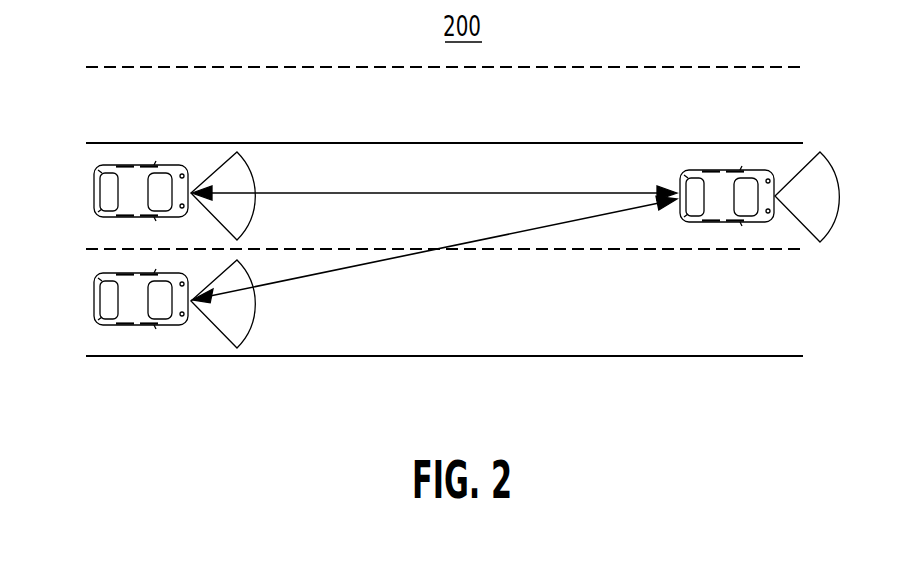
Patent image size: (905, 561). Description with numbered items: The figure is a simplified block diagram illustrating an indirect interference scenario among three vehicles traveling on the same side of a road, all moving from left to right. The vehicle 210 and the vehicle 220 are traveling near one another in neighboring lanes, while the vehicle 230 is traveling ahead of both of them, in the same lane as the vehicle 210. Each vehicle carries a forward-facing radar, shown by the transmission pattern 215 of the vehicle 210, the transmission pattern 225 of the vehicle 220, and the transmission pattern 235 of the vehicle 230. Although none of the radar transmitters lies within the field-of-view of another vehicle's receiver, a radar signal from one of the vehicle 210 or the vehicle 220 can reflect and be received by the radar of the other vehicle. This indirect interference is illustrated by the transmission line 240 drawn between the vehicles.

The vehicle 210 is at (91, 190).
The transmission pattern 215 is at (240, 170).
The vehicle 220 is at (93, 304).
The transmission pattern 225 is at (237, 317).
The vehicle 230 is at (673, 167).
The transmission pattern 235 is at (827, 170).
The transmission line 240 is at (505, 232).